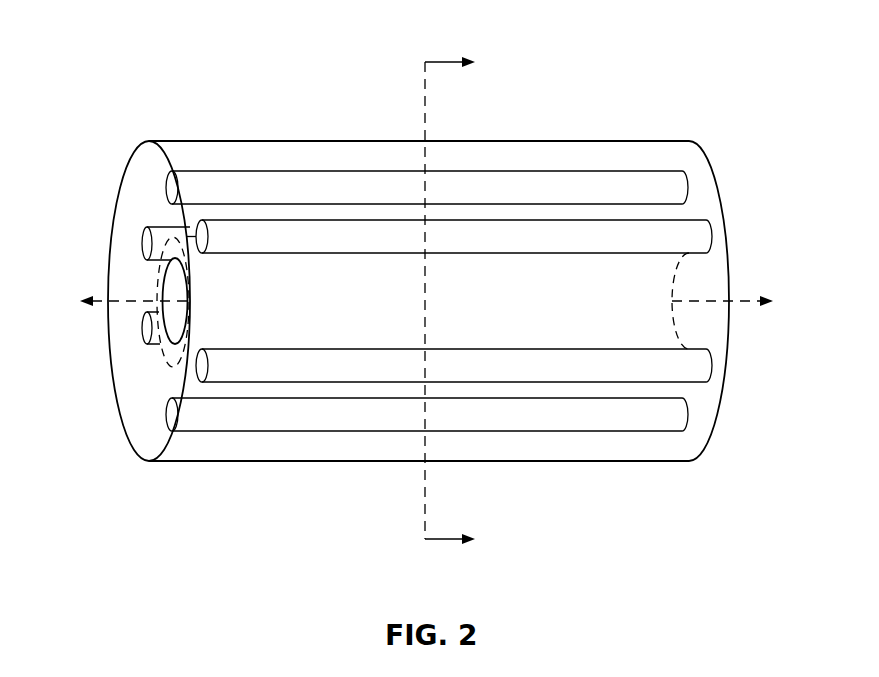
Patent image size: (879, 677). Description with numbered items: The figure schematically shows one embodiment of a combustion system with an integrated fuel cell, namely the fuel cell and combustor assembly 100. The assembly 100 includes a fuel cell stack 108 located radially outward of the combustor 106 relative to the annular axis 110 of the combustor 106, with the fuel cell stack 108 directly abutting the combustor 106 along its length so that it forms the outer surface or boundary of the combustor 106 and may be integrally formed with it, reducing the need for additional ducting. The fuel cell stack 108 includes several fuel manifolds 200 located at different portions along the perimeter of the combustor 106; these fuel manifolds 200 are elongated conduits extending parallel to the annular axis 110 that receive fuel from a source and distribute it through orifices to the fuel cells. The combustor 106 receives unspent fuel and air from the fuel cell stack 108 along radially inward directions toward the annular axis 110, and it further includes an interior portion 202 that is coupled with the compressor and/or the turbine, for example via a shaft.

The fuel cell and combustor assembly 100 is at (428, 287).
The fuel cell stack 108 is at (323, 462).
The fuel manifolds 200 is at (347, 178).
The combustor 106 is at (178, 253).
The interior portion 202 is at (170, 321).
The annular axis 110 is at (738, 301).